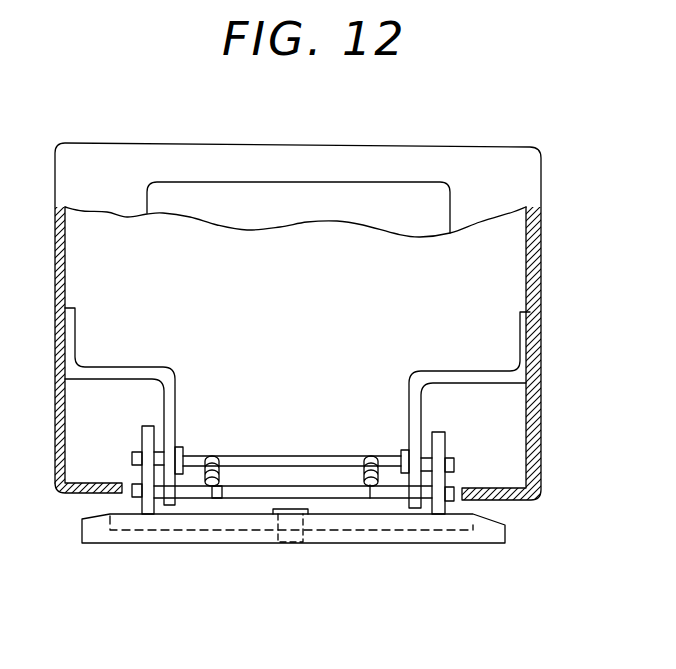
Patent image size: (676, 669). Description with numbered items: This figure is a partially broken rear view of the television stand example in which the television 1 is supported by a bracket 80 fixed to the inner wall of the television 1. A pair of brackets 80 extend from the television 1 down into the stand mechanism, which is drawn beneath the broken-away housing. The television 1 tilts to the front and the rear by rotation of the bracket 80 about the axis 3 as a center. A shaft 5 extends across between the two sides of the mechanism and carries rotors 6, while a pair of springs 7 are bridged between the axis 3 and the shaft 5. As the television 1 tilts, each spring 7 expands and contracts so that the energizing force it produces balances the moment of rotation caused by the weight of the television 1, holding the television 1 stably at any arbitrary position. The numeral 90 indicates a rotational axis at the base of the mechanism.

The television 1 is at (490, 157).
The axis 3 is at (235, 496).
The shaft 5 is at (277, 457).
The rotor 6 is at (181, 448).
The spring 7 is at (234, 457).
The bracket 80 is at (131, 376).
The rotational axis 90 is at (302, 523).